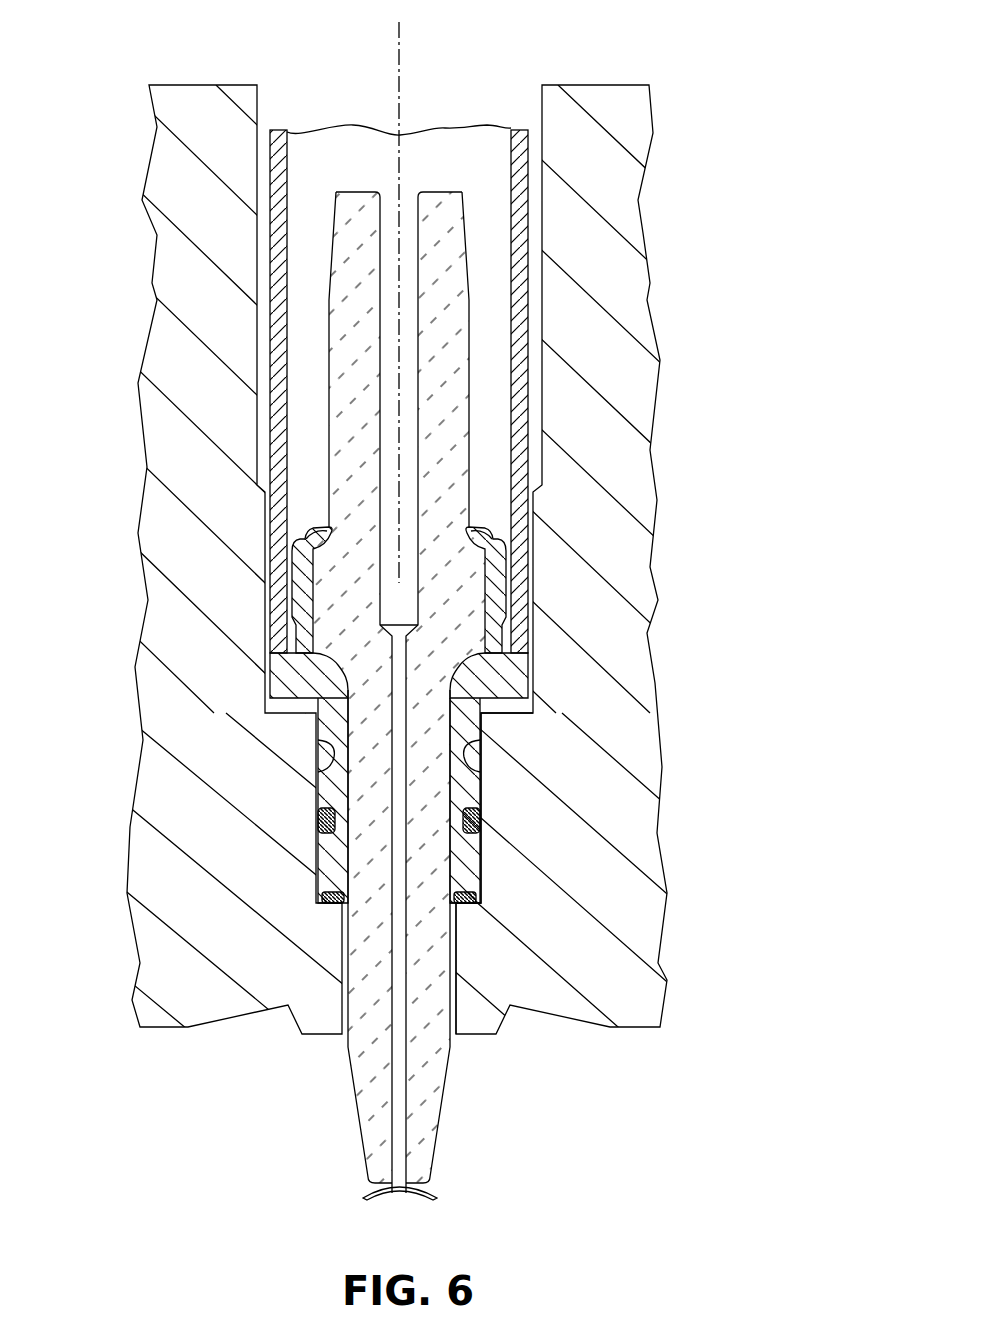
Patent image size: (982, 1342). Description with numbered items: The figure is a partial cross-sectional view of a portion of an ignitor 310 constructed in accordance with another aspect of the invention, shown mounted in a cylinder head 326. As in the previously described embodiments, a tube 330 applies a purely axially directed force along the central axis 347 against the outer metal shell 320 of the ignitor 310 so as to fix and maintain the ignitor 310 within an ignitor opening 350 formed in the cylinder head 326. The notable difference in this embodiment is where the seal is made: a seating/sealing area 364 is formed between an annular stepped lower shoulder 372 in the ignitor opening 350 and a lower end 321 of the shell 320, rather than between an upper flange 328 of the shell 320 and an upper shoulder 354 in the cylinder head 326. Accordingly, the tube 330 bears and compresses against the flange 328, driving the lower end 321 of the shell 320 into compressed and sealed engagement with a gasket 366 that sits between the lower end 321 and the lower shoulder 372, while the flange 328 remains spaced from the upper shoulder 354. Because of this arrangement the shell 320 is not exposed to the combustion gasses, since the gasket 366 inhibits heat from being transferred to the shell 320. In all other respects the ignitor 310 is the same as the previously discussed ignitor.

The ignitor 310 is at (491, 559).
The cylinder head 326 is at (632, 210).
The tube 330 is at (528, 385).
The outer metal shell 320 is at (497, 545).
The upper flange 328 is at (537, 668).
The upper shoulder 354 is at (517, 705).
The ignitor opening 350 is at (320, 748).
The seating/sealing area 364 is at (509, 874).
The lower end 321 is at (481, 895).
The annular stepped lower shoulder 372 is at (481, 903).
The gasket 366 is at (331, 905).
The central axis 347 is at (406, 82).